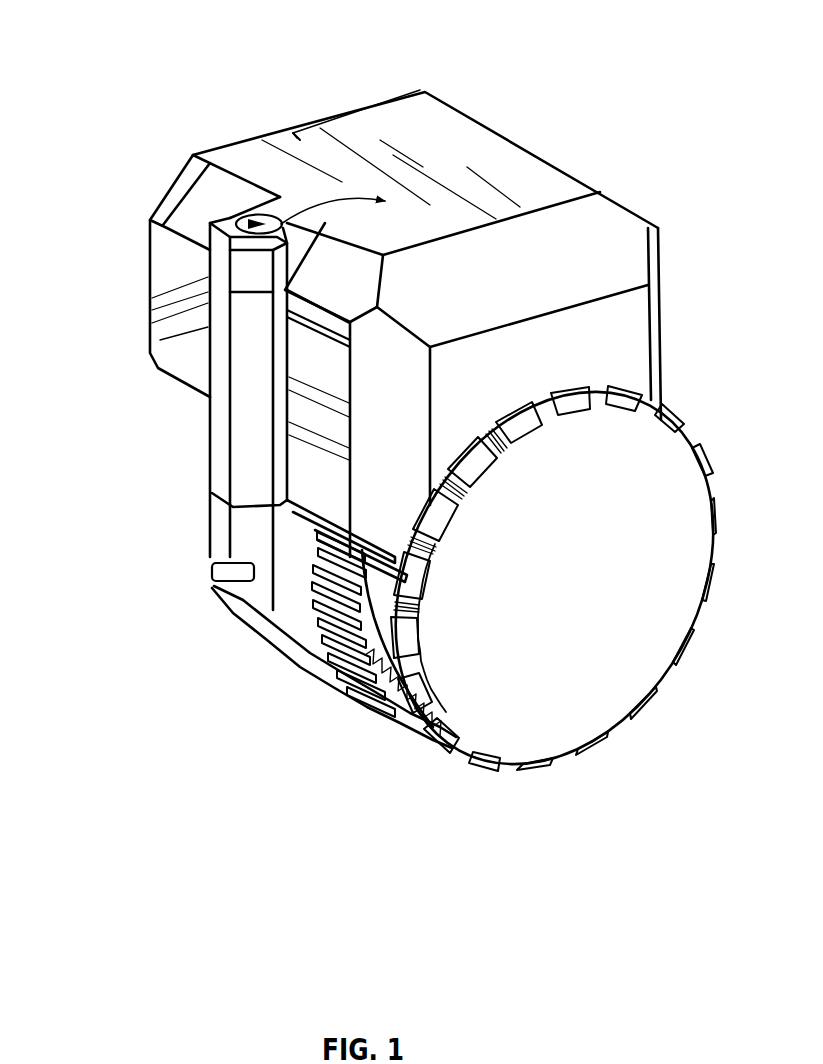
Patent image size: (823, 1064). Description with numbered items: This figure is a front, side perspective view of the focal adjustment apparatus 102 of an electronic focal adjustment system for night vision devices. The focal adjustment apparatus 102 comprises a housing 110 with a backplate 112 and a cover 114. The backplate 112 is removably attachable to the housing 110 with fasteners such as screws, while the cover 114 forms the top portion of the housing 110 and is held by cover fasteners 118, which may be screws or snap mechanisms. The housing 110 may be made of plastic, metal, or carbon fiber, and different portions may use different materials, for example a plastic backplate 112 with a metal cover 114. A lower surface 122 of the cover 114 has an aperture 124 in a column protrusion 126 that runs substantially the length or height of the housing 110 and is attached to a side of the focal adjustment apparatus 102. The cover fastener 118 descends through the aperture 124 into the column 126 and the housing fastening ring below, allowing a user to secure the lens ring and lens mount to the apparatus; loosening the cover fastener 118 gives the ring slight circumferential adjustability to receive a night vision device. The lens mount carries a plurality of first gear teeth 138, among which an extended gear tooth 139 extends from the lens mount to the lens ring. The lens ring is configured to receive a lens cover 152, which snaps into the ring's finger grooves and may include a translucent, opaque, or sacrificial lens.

The focal adjustment apparatus 102 is at (612, 322).
The housing 110 is at (549, 182).
The backplate 112 is at (263, 145).
The cover 114 is at (436, 128).
The cover fastener 118 is at (268, 219).
The lower surface 122 is at (277, 250).
The aperture 124 is at (207, 200).
The column protrusion 126 is at (242, 432).
The first gear teeth 138 is at (317, 558).
The extended gear tooth 139 is at (352, 670).
The lens cover 152 is at (643, 470).